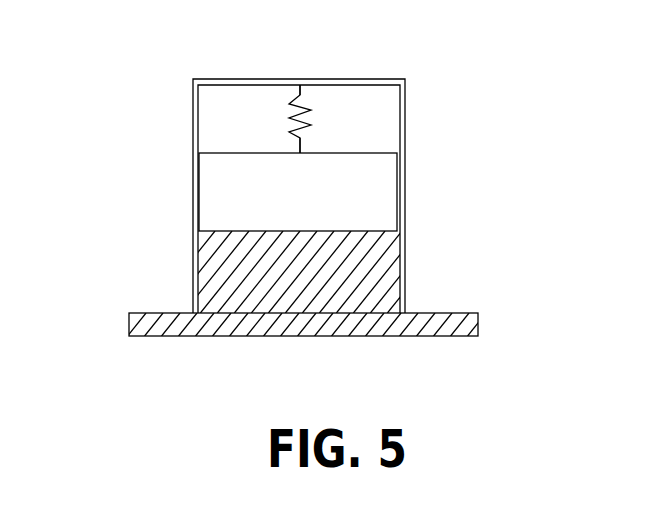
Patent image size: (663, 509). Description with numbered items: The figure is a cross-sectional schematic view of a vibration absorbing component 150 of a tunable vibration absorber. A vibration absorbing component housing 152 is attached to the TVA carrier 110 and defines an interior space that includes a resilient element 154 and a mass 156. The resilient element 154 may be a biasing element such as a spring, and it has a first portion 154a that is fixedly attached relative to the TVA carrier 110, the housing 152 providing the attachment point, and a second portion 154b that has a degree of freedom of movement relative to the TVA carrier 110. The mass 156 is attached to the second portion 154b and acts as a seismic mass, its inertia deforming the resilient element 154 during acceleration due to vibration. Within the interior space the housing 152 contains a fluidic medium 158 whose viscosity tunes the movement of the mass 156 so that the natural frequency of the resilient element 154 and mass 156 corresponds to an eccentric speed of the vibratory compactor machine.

The TVA carrier 110 is at (473, 312).
The vibration absorbing component 150 is at (212, 79).
The vibration absorbing component housing 152 is at (363, 80).
The resilient element 154 is at (313, 122).
The first portion 154a is at (299, 93).
The second portion 154b is at (299, 152).
The mass 156 is at (393, 205).
The fluidic medium 158 is at (393, 273).